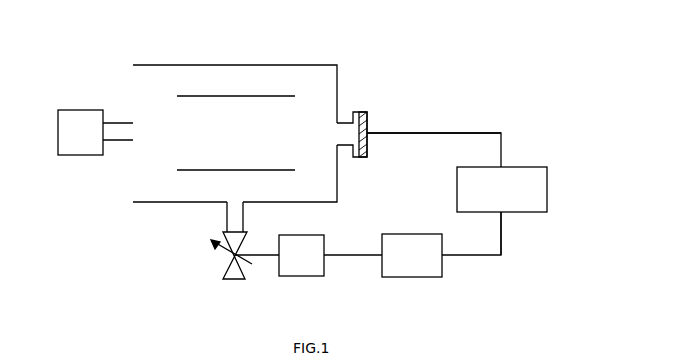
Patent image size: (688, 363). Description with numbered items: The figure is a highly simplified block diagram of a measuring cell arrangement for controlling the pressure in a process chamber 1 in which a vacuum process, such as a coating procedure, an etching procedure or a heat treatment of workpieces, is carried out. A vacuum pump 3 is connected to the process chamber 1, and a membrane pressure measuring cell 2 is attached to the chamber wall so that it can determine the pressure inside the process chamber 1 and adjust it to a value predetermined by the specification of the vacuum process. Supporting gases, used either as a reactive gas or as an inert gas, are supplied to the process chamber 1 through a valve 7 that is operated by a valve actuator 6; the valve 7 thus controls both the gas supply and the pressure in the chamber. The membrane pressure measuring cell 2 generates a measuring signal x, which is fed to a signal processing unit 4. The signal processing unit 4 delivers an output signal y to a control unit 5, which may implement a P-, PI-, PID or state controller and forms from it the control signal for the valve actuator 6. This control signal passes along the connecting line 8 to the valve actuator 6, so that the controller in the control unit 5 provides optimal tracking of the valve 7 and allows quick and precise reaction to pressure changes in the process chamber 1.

The process chamber 1 is at (313, 80).
The membrane pressure measuring cell 2 is at (363, 111).
The vacuum pump 3 is at (78, 109).
The signal processing unit 4 is at (547, 190).
The control unit 5 is at (408, 277).
The valve actuator 6 is at (300, 276).
The valve 7 is at (221, 265).
The signal line 8 is at (352, 256).
The measuring signal x is at (447, 133).
The output signal y is at (501, 236).